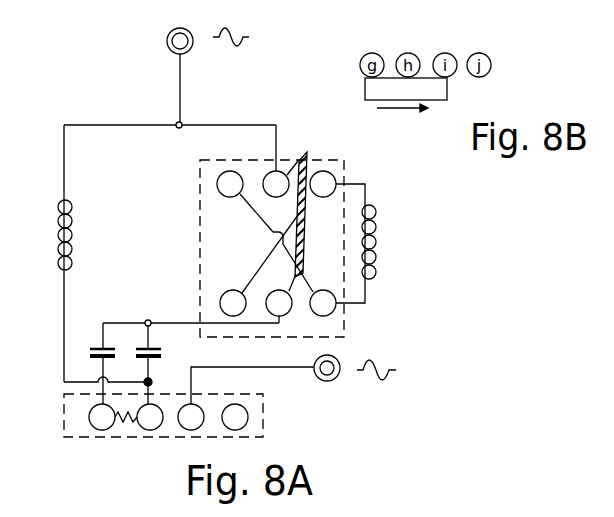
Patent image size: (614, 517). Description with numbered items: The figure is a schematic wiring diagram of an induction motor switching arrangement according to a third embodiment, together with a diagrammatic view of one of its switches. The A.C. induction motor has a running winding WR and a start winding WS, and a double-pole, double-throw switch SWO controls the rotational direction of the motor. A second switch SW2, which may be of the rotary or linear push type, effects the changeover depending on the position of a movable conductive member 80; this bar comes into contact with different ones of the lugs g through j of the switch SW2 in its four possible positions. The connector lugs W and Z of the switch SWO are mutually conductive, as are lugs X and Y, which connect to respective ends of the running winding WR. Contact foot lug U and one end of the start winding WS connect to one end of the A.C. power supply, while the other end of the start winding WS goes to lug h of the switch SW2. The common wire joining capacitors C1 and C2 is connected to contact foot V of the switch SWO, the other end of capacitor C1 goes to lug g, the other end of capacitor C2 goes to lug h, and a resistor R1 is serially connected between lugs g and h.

In FIG. 8B, the movable conductive member 80 is at (390, 78).
In FIG. 8A, the running winding WR is at (38, 235).
In FIG. 8A, the start winding WS is at (388, 242).
In FIG. 8A, the double-pole, double-throw switch SWO is at (276, 233).
In FIG. 8A, the switch SW2 is at (190, 415).
In FIG. 8A, the capacitor C1 is at (96, 363).
In FIG. 8A, the capacitor C2 is at (157, 365).
In FIG. 8A, the resistor R1 is at (126, 408).